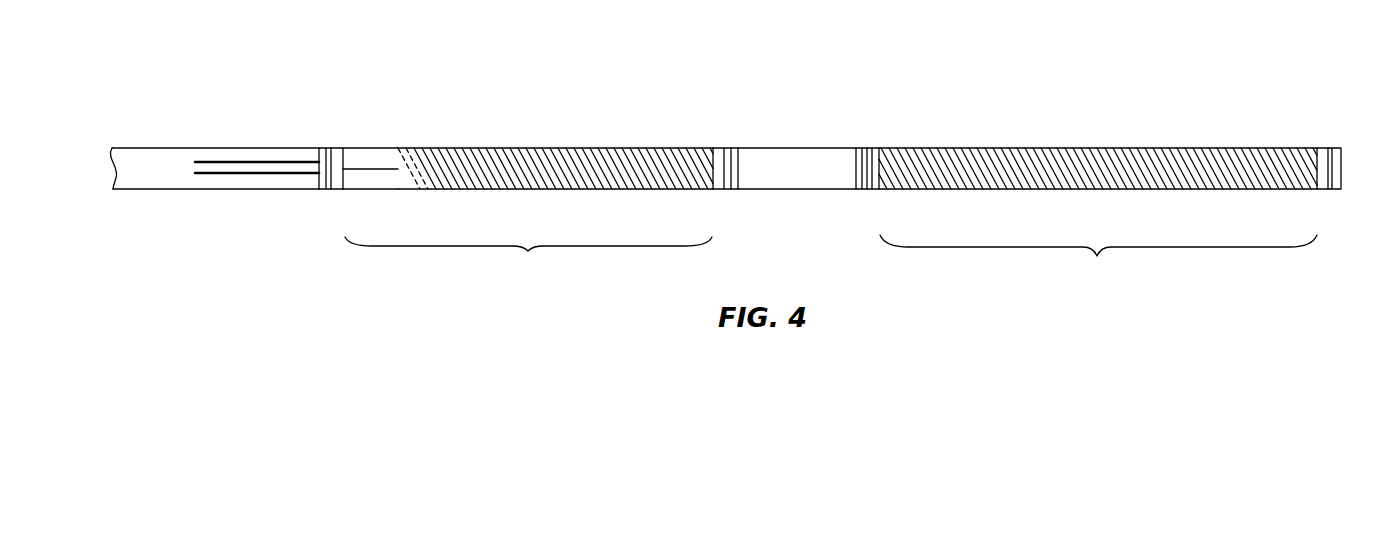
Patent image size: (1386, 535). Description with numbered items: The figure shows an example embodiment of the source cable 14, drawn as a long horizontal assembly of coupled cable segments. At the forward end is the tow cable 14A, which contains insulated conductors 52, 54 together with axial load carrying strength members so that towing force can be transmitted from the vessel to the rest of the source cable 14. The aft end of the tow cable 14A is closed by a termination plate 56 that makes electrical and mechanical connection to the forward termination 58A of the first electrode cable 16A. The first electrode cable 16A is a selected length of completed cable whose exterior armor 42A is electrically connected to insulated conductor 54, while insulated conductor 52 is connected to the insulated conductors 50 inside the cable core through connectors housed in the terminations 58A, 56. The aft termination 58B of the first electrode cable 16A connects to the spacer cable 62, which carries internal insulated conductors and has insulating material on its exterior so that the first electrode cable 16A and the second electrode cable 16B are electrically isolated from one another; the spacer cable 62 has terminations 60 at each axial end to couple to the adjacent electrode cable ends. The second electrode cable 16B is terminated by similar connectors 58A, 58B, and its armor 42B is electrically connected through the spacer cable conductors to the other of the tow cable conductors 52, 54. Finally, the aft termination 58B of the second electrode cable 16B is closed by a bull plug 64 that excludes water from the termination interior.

The source cable 14 is at (238, 72).
The tow cable 14A is at (130, 190).
The first electrode cable 16A is at (528, 260).
The second electrode cable 16B is at (1098, 262).
The armor of first electrode cable 42A is at (512, 147).
The armor of second electrode cable 42B is at (1090, 147).
The insulated conductors 50 is at (372, 169).
The insulated conductor 52 is at (215, 156).
The insulated conductor 54 is at (225, 173).
The termination plate 56 is at (326, 190).
The forward termination 58A is at (336, 147).
The aft termination 58B is at (718, 147).
The terminations 60 is at (862, 147).
The spacer cable 62 is at (817, 190).
The bull plug 64 is at (1342, 167).